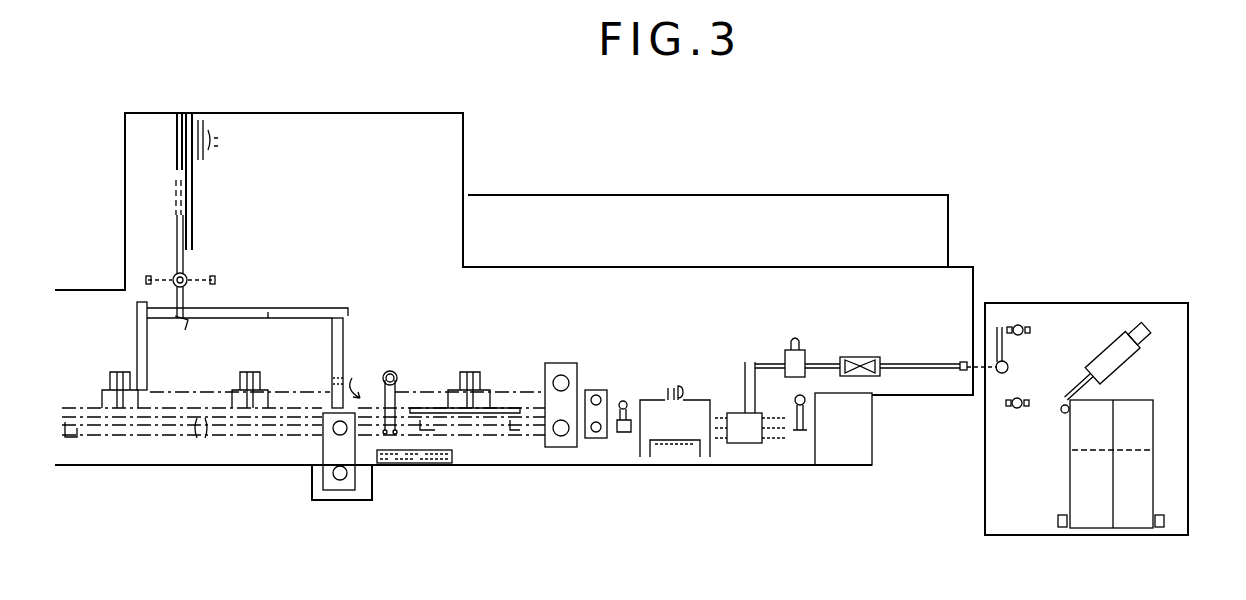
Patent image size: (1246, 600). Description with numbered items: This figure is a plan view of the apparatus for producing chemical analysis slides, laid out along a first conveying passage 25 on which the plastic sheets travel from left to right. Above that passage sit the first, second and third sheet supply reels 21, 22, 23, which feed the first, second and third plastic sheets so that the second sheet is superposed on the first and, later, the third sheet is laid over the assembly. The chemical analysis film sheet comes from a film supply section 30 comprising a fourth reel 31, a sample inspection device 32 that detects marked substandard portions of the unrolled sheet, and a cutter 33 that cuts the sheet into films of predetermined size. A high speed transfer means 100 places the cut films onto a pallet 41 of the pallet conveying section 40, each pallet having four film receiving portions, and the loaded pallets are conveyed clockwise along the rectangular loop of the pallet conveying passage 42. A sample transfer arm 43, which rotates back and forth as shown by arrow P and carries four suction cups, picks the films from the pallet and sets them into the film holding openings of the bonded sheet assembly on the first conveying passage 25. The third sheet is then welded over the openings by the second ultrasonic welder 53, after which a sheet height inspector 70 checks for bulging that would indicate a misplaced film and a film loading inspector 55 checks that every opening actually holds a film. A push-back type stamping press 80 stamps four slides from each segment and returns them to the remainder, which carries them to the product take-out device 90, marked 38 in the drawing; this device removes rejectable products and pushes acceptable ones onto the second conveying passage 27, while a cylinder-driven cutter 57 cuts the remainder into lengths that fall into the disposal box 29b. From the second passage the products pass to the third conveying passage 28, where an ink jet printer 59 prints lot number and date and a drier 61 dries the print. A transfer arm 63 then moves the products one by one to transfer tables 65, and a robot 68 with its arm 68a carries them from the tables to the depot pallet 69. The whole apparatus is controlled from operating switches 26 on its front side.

The first sheet supply reel 21 is at (120, 440).
The second sheet supply reel 22 is at (250, 440).
The third sheet supply reel 23 is at (480, 430).
The first conveying passage 25 is at (200, 440).
The operating switches 26 is at (410, 465).
The second conveying passage 27 is at (745, 376).
The third conveying passage 28 is at (920, 362).
The drive unit 29b is at (879, 441).
The tube assembly 30 is at (202, 181).
The fourth reel 31 is at (174, 146).
The sample inspection device 32 is at (168, 206).
The cutter 33 is at (205, 240).
The valve 38 is at (742, 427).
The pallet conveying section 40 is at (330, 297).
The pallet 41 is at (183, 320).
The pallet conveying passage 42 is at (270, 320).
The sample transfer arm 43 is at (400, 393).
The second ultrasonic welder 53 is at (565, 362).
The film loading inspector 55 is at (622, 395).
The cutter 57 is at (805, 436).
The ink jet printer 59 is at (806, 355).
The drier 61 is at (863, 356).
The transfer arm 63 is at (967, 372).
The transfer tables 65 is at (1023, 325).
The robot 68 is at (1110, 346).
The arm 68a is at (1061, 415).
The depot pallet 69 is at (1162, 438).
The sheet height inspector 70 is at (600, 384).
The stamping press 80 is at (657, 394).
The product take-out device 90 is at (755, 450).
The high speed transfer means 100 is at (228, 270).
The arrow P is at (378, 392).